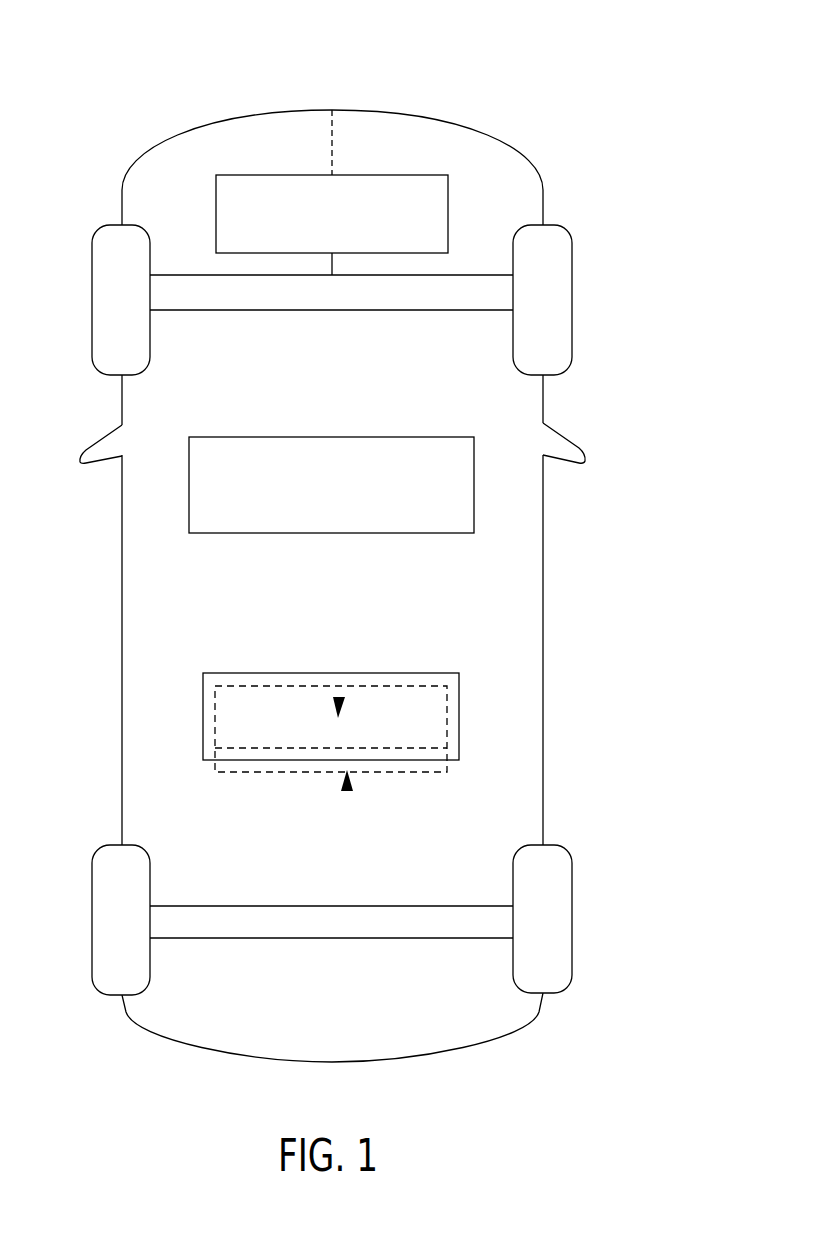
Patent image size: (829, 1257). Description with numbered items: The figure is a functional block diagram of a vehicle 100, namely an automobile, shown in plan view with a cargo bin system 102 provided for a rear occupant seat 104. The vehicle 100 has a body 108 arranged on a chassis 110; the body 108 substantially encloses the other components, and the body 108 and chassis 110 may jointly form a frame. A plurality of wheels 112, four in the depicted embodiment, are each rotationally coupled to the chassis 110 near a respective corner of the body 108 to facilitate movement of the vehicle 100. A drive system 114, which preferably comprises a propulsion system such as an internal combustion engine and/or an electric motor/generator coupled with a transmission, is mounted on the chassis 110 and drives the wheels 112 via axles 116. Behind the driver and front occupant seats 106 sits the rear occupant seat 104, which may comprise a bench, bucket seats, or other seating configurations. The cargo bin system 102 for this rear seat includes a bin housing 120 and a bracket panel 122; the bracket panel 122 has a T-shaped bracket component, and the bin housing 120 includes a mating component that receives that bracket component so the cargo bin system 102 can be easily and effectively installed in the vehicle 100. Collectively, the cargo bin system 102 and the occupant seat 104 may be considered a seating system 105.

The vehicle 100 is at (351, 533).
The cargo bin system 102 is at (207, 686).
The occupant seat 104 is at (437, 684).
The seating system 105 is at (338, 695).
The front occupant seats 106 is at (446, 452).
The body 108 is at (122, 575).
The chassis 110 is at (348, 120).
The wheels 112 is at (100, 243).
The drive system 114 is at (424, 190).
The axles 116 is at (193, 302).
The bin housing 120 is at (341, 698).
The bracket panel 122 is at (346, 790).